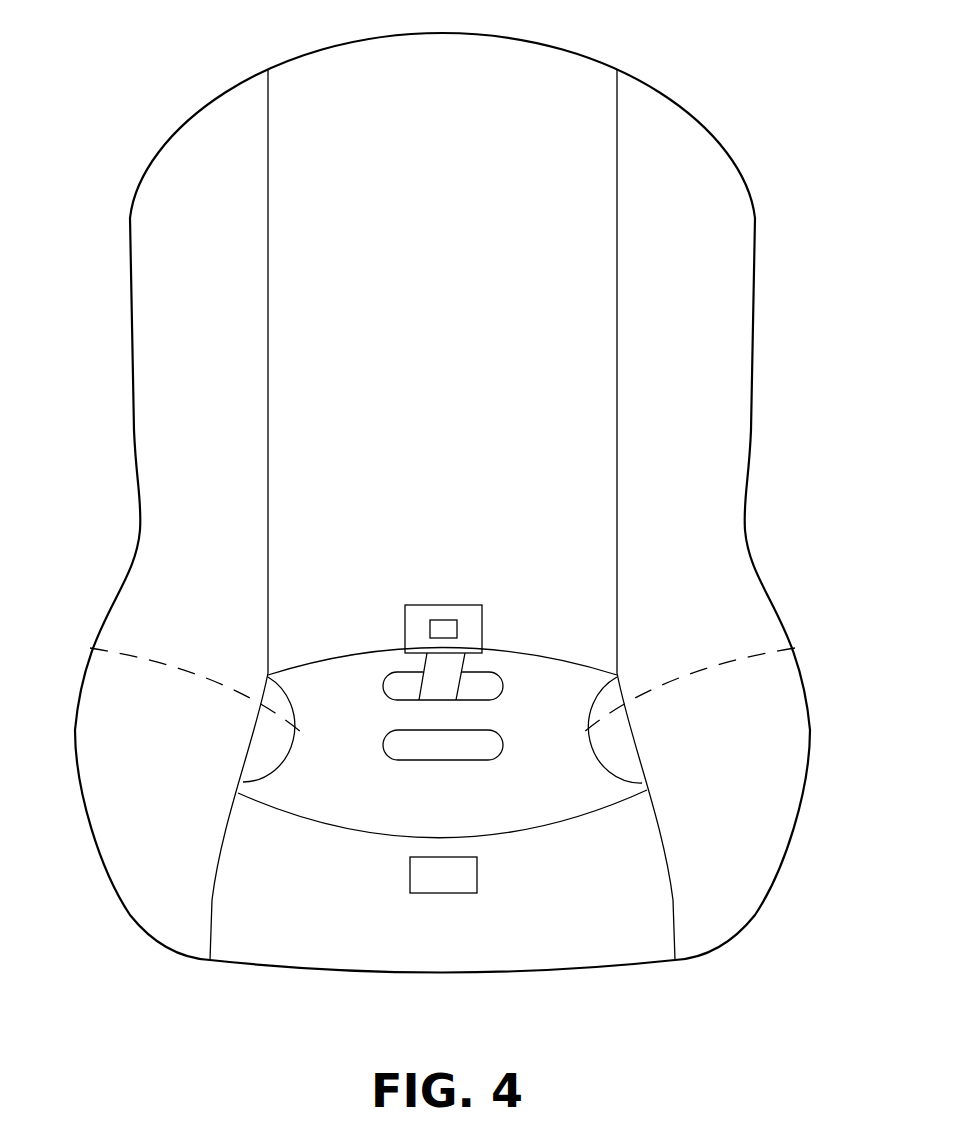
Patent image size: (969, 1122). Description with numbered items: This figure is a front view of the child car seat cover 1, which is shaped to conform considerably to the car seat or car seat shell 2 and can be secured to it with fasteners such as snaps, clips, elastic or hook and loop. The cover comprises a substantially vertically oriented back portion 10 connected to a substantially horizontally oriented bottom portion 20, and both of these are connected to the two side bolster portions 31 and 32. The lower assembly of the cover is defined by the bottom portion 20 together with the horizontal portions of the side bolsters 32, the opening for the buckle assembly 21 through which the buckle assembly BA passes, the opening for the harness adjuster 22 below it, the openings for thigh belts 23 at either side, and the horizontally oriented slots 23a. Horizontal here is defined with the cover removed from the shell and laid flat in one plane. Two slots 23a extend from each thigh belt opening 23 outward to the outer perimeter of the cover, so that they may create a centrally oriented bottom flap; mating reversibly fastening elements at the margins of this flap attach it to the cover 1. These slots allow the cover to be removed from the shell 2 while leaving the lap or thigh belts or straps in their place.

The child car seat cover 1 is at (575, 83).
The back portion 10 is at (422, 287).
The side bolster portion 31 is at (206, 188).
The car seat shell 2 is at (117, 363).
The horizontally oriented slot 23a is at (178, 667).
The horizontal portion of the side bolster 32 is at (226, 713).
The opening for thigh belt 23 is at (272, 746).
The bottom portion 20 is at (423, 805).
The opening for the buckle assembly 21 is at (491, 701).
The buckle assembly BA is at (458, 604).
The opening for the harness adjuster 22 is at (441, 899).